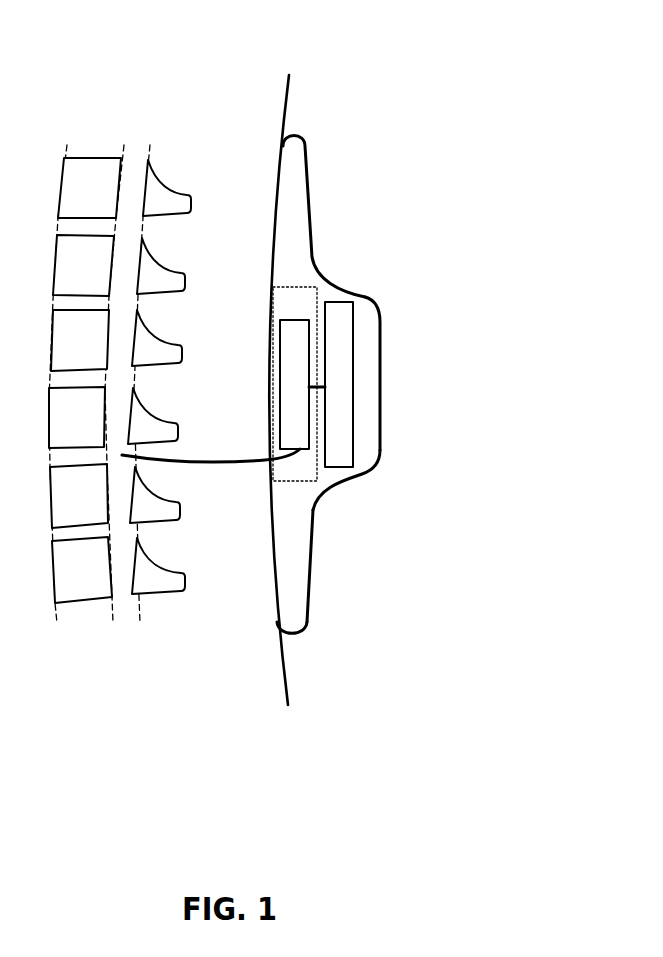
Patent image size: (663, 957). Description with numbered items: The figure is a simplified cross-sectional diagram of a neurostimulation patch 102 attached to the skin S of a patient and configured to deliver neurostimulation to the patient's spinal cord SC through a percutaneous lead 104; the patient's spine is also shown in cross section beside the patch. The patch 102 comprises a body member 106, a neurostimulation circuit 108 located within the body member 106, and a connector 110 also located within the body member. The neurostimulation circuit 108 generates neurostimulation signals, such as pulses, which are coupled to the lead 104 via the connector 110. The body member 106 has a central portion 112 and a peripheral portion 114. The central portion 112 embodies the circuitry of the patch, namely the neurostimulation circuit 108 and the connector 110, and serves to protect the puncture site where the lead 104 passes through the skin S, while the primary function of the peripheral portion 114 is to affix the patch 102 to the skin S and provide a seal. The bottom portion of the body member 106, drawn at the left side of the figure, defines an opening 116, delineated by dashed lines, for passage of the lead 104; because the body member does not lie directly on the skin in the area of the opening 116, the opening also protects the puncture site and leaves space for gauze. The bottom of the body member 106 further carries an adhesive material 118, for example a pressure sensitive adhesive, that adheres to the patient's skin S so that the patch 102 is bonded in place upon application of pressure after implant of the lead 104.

The skin S is at (288, 103).
The spinal cord SC is at (142, 112).
The neurostimulation patch 102 is at (383, 214).
The percutaneous lead 104 is at (240, 465).
The body member 106 is at (391, 501).
The neurostimulation circuit 108 is at (399, 384).
The connector 110 is at (377, 339).
The central portion 112 is at (441, 373).
The peripheral portion 114 is at (388, 566).
The opening 116 is at (304, 280).
The adhesive material 118 is at (268, 590).